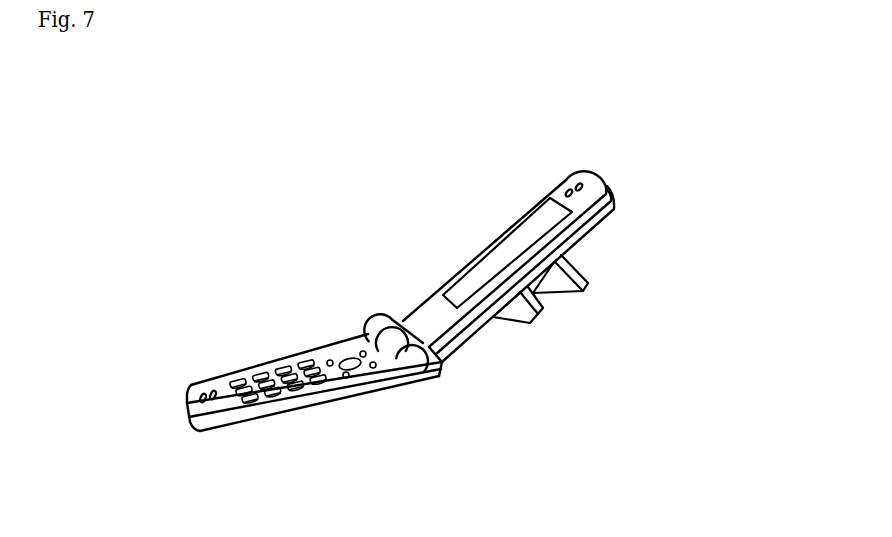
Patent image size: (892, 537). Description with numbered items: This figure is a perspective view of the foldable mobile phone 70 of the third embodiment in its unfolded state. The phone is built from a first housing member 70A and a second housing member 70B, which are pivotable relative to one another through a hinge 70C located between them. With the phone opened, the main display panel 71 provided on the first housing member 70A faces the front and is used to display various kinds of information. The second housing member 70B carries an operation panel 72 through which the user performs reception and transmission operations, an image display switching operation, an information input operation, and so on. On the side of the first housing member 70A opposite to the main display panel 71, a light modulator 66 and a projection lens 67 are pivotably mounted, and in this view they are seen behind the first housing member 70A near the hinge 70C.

The mobile phone 70 is at (674, 150).
The first housing member 70A is at (596, 172).
The second housing member 70B is at (288, 396).
The hinge 70C is at (382, 316).
The main display panel 71 is at (497, 257).
The operation panel 72 is at (288, 368).
The light modulator 66 is at (541, 322).
The projection lens 67 is at (577, 293).